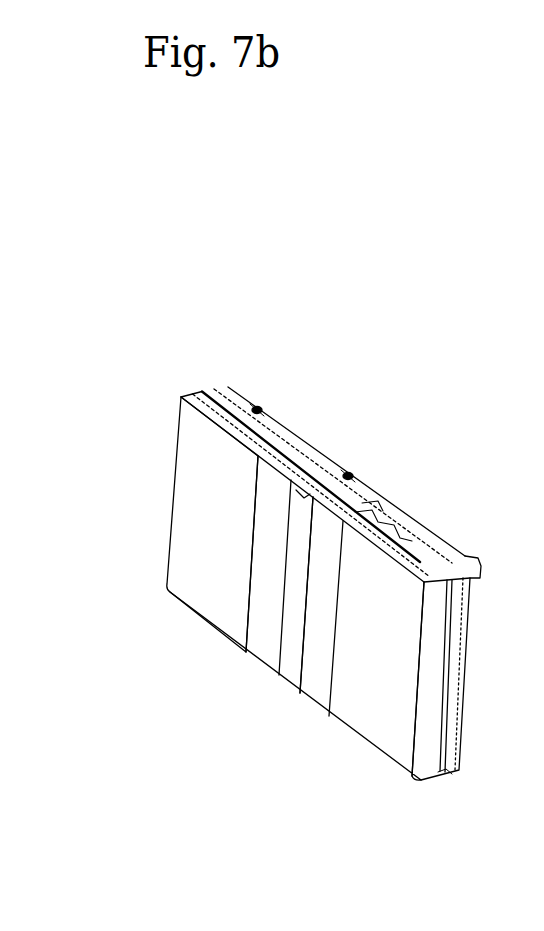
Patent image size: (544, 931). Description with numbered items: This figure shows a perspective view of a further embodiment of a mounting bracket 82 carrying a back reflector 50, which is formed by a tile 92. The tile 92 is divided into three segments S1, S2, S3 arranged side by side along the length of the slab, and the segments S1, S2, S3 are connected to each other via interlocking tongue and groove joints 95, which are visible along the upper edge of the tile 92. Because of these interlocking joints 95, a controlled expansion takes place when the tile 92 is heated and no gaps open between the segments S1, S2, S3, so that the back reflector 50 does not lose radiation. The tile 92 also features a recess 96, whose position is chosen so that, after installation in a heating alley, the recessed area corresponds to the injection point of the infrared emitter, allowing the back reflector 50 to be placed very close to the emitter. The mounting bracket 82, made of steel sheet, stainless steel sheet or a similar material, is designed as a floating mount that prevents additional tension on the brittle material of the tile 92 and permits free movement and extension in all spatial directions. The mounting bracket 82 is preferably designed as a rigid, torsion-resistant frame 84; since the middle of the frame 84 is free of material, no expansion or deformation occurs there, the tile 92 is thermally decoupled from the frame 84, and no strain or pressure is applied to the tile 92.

The back reflector 50 is at (353, 583).
The tile 92 is at (400, 584).
The mounting bracket 82 is at (271, 399).
The frame 84 is at (229, 408).
The interlocking tongue and groove joint 95 is at (256, 408).
The recess 96 is at (303, 495).
The segment S1 is at (381, 668).
The segment S2 is at (288, 611).
The segment S3 is at (218, 572).